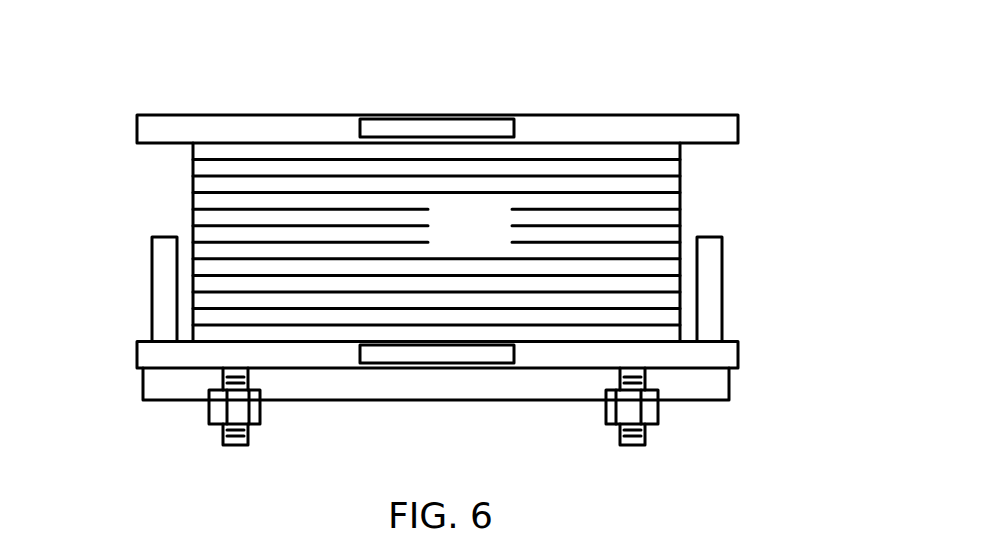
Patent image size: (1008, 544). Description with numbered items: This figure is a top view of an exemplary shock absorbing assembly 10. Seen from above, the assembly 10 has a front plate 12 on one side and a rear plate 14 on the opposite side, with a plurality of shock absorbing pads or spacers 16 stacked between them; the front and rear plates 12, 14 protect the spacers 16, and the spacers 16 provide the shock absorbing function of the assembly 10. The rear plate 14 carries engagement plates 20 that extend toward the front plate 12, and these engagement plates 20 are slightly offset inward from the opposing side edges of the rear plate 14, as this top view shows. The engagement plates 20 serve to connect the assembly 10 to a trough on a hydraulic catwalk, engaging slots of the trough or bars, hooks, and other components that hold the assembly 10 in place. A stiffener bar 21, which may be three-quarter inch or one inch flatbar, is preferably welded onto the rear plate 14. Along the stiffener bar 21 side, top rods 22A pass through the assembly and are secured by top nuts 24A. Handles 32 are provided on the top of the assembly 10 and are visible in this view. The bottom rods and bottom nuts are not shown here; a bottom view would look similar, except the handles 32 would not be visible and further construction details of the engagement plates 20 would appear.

The shock absorbing assembly 10 is at (268, 68).
The front plate 12 is at (222, 113).
The rear plate 14 is at (137, 350).
The shock absorbing pads or spacers 16 is at (483, 234).
The engagement plates 20 is at (152, 248).
The stiffener bar 21 is at (390, 400).
The top rods 22A is at (645, 445).
The top nuts 24A is at (658, 403).
The handles 32 is at (491, 126).